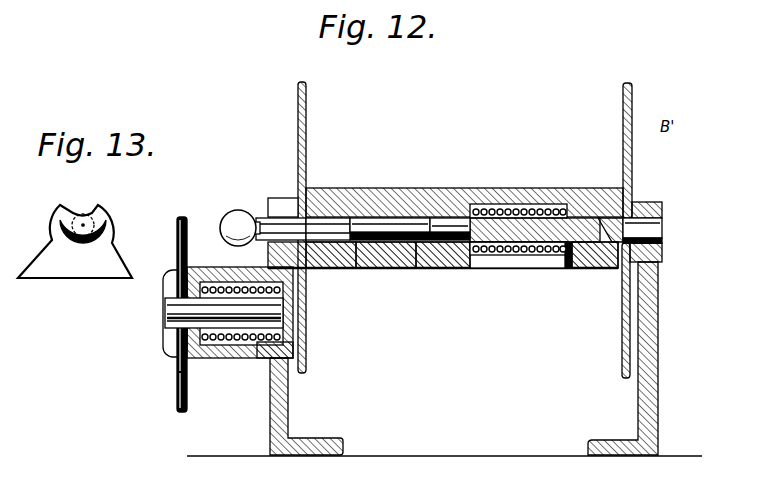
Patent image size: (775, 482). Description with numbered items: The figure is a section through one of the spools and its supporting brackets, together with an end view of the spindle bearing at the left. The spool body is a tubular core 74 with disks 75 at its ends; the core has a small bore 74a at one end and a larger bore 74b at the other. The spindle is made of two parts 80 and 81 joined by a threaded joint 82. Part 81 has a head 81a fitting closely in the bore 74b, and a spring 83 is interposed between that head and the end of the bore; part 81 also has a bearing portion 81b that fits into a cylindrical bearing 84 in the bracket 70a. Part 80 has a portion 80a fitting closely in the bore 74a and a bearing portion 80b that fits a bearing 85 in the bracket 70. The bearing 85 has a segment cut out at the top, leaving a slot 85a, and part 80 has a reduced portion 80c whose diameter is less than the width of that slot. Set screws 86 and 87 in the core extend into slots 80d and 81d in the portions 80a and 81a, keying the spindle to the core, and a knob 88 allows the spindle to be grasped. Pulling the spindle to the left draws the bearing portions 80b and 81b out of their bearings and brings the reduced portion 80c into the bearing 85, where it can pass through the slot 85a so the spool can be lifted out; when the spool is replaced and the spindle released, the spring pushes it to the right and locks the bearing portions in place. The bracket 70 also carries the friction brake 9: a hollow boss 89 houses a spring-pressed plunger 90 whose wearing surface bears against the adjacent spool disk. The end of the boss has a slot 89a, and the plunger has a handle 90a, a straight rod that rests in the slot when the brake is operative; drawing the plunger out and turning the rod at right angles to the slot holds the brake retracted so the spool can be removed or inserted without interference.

In FIG. 12, the bracket 70 is at (289, 410).
In FIG. 13, the bracket 70 is at (123, 258).
In FIG. 12, the bracket 70a is at (659, 350).
In FIG. 12, the tubular core 74 is at (455, 188).
In FIG. 12, the small bore 74a is at (337, 268).
In FIG. 12, the larger bore 74b is at (508, 268).
In FIG. 12, the disks 75 is at (307, 97).
In FIG. 12, the spindle part 80 is at (443, 268).
In FIG. 12, the portion 80a is at (388, 219).
In FIG. 12, the bearing portion 80b is at (268, 222).
In FIG. 12, the reduced portion 80c is at (330, 227).
In FIG. 12, the slot 80d is at (404, 268).
In FIG. 12, the spindle part 81 is at (550, 226).
In FIG. 12, the head 81a is at (592, 214).
In FIG. 12, the bearing portion 81b is at (660, 229).
In FIG. 12, the slot 81d is at (600, 268).
In FIG. 12, the threaded joint 82 is at (487, 232).
In FIG. 12, the spring 83 is at (483, 268).
In FIG. 12, the cylindrical bearing 84 is at (662, 257).
In FIG. 13, the bearing 85 is at (79, 240).
In FIG. 12, the slot 85a is at (283, 208).
In FIG. 13, the slot 85a is at (84, 212).
In FIG. 12, the set screw 86 is at (360, 268).
In FIG. 12, the set screw 87 is at (566, 270).
In FIG. 12, the knob 88 is at (232, 220).
In FIG. 12, the hollow boss 89 is at (205, 362).
In FIG. 12, the slot 89a is at (168, 343).
In FIG. 12, the friction brake 9 is at (240, 331).
In FIG. 12, the spring pressed plunger 90 is at (258, 358).
In FIG. 12, the handle 90a is at (176, 378).